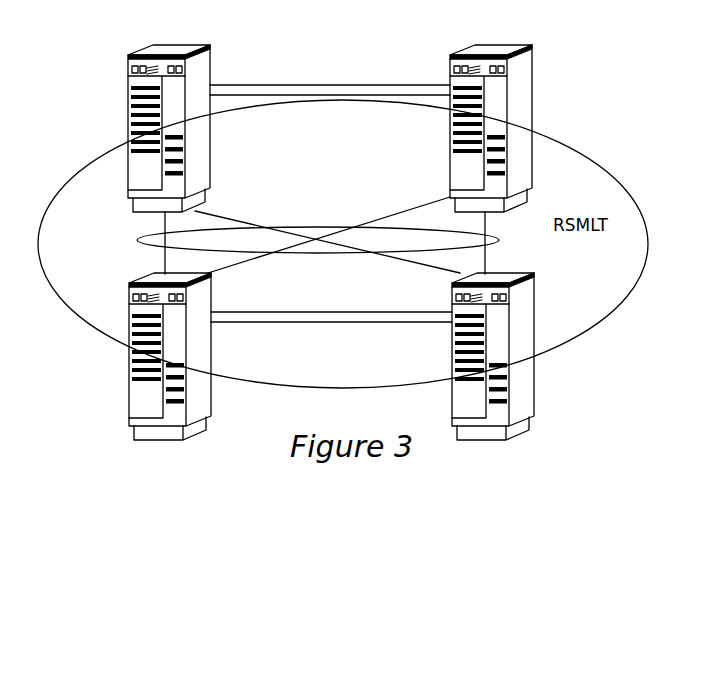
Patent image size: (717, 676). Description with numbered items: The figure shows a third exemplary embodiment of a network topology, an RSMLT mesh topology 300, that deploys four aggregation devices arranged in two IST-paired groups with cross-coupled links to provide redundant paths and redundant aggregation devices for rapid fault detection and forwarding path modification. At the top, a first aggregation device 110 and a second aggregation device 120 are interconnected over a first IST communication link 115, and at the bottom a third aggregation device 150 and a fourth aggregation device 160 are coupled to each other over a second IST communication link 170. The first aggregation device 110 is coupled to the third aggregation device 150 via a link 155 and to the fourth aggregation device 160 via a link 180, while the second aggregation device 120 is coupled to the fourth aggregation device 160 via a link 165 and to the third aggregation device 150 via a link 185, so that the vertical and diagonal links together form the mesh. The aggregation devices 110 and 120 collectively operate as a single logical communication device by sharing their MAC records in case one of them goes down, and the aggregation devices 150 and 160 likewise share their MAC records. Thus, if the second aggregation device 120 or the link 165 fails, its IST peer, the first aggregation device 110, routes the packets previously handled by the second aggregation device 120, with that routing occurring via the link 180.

The first aggregation device 110 is at (108, 105).
The first IST communication link 115 is at (230, 80).
The second aggregation device 120 is at (552, 88).
The third aggregation device 150 is at (108, 372).
The link 155 is at (157, 222).
The fourth aggregation device 160 is at (545, 375).
The link 165 is at (490, 222).
The second IST communication link 170 is at (235, 309).
The link 180 is at (202, 216).
The link 185 is at (423, 206).
The mesh topology 300 is at (714, 255).